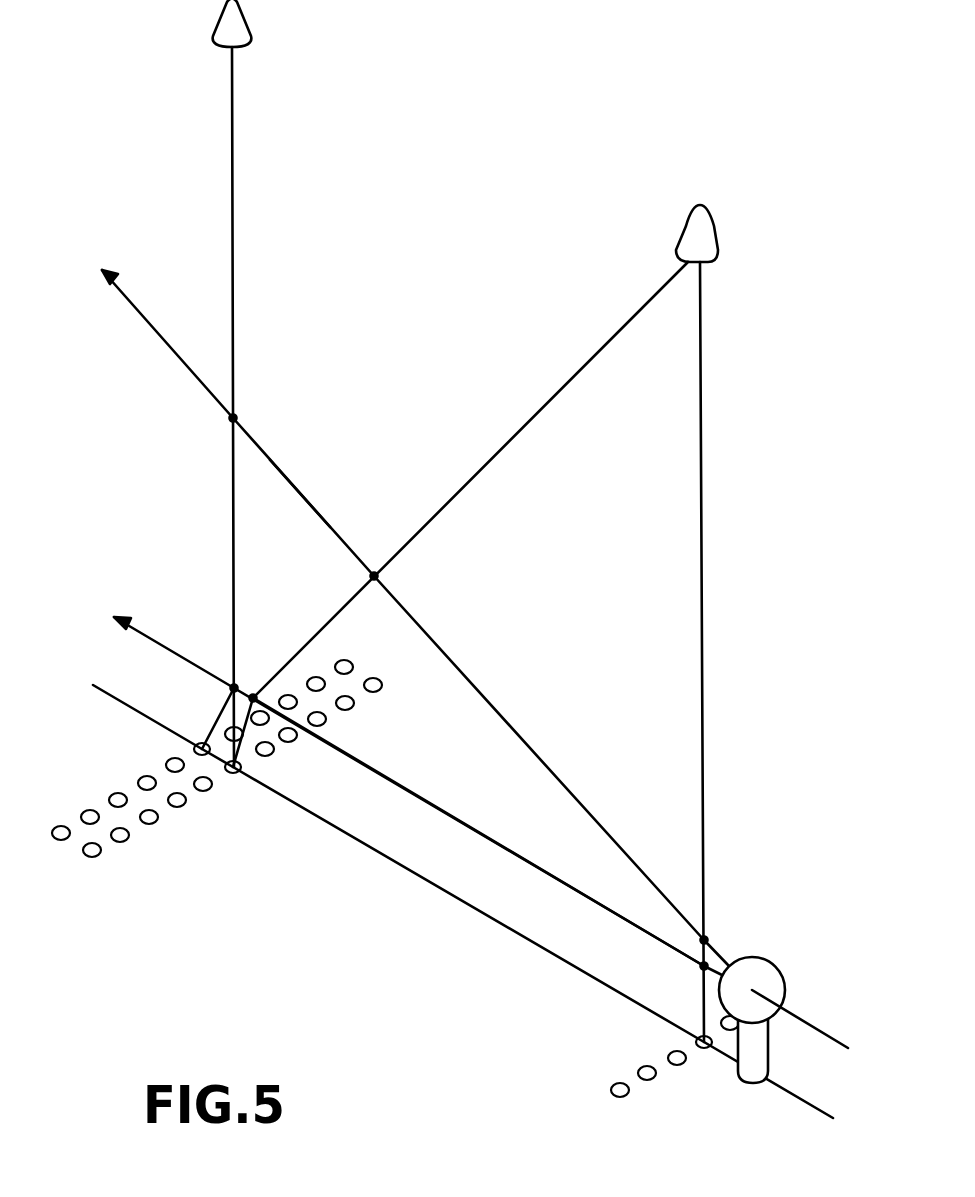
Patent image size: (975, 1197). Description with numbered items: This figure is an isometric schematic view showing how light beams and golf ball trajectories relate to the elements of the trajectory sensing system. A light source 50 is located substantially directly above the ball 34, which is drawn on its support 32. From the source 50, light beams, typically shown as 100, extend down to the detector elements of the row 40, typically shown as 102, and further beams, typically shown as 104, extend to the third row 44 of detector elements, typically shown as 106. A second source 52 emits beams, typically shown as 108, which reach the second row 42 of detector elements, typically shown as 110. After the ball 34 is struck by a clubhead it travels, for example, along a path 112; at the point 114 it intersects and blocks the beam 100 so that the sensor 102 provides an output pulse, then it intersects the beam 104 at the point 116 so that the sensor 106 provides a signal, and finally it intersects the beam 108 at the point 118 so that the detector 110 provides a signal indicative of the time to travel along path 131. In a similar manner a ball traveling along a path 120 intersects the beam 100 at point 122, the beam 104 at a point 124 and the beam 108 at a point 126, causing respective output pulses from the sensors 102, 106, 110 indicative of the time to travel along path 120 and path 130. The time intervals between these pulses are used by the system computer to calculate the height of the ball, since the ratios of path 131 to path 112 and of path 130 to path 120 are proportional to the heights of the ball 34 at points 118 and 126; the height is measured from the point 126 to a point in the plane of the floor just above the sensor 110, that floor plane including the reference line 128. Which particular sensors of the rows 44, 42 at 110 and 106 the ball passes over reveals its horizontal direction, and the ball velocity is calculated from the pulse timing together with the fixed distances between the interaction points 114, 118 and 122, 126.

The lens support stem 32 is at (753, 1080).
The ball 34 is at (785, 975).
The row of detector elements 40 is at (633, 1073).
The second row of detector elements 42 is at (95, 858).
The third row of detector elements 44 is at (61, 842).
The light source 50 is at (700, 240).
The second source 52 is at (219, 44).
The light beam 100 is at (702, 550).
The detector element 102 is at (696, 1042).
The light beam 104 is at (548, 402).
The detector element 106 is at (194, 748).
The light beam 108 is at (232, 230).
The detector element 110 is at (233, 775).
The path 112 is at (485, 838).
The point 114 is at (698, 967).
The point 116 is at (255, 695).
The point 118 is at (228, 690).
The path 120 is at (527, 742).
The point 122 is at (708, 938).
The point 124 is at (378, 576).
The point 126 is at (236, 416).
The reference line 128 is at (547, 953).
The path 130 is at (303, 493).
The path 131 is at (238, 686).